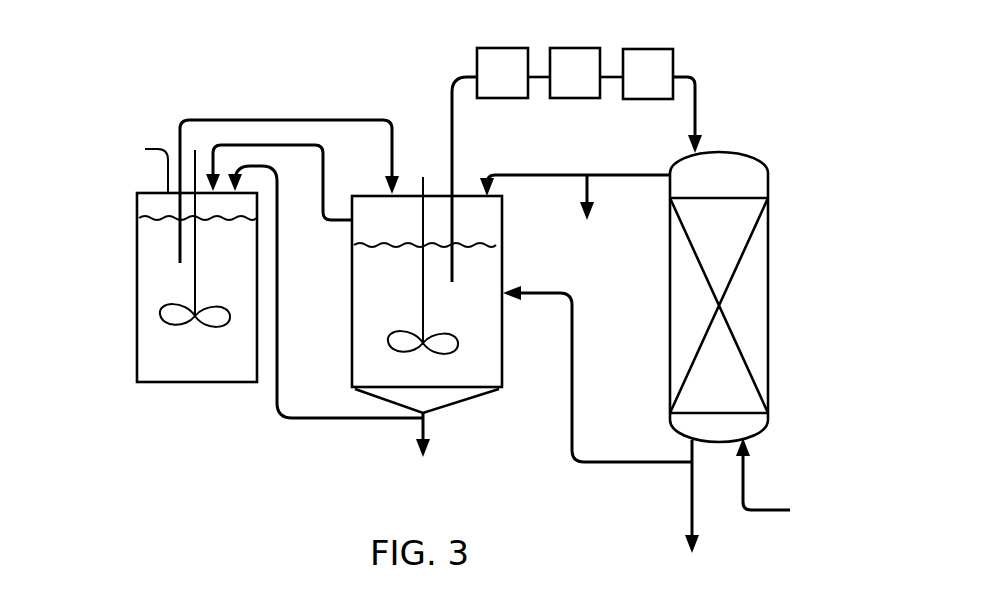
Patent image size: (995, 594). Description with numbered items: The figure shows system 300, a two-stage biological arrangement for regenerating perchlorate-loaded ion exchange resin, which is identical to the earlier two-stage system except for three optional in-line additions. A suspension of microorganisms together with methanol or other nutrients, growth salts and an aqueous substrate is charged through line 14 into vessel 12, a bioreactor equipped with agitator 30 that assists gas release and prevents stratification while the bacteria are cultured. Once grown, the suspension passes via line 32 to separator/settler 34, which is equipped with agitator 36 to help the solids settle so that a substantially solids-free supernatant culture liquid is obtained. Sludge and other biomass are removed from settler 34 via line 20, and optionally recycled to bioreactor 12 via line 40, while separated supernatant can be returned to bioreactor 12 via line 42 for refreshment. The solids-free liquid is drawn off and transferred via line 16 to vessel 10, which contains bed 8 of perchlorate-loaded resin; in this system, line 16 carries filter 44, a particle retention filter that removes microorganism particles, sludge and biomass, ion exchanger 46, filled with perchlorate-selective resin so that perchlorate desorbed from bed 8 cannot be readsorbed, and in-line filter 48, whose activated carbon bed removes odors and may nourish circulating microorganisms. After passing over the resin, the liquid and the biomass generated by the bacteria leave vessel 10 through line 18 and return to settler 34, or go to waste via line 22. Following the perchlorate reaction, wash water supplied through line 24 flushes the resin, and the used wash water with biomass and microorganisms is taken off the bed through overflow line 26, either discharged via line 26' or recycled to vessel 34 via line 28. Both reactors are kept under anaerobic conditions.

The system 300 is at (230, 485).
The vessel 12 is at (145, 350).
The line 14 is at (163, 152).
The agitator 30 is at (192, 280).
The line 32 is at (288, 119).
The line 42 is at (325, 160).
The line 40 is at (282, 215).
The separator/settler 34 is at (350, 282).
The agitator 36 is at (423, 307).
The line 20 is at (427, 433).
The line 16 is at (453, 93).
The filter 44 is at (508, 47).
The ion exchanger 46 is at (582, 47).
The in-line filter 48 is at (655, 48).
The vessel 10 is at (758, 182).
The bed 8 is at (758, 280).
The overflow line 26 is at (628, 156).
The line 28 is at (512, 173).
The line 26' is at (611, 197).
The line 18 is at (573, 365).
The line 22 is at (690, 503).
The line 24 is at (748, 506).